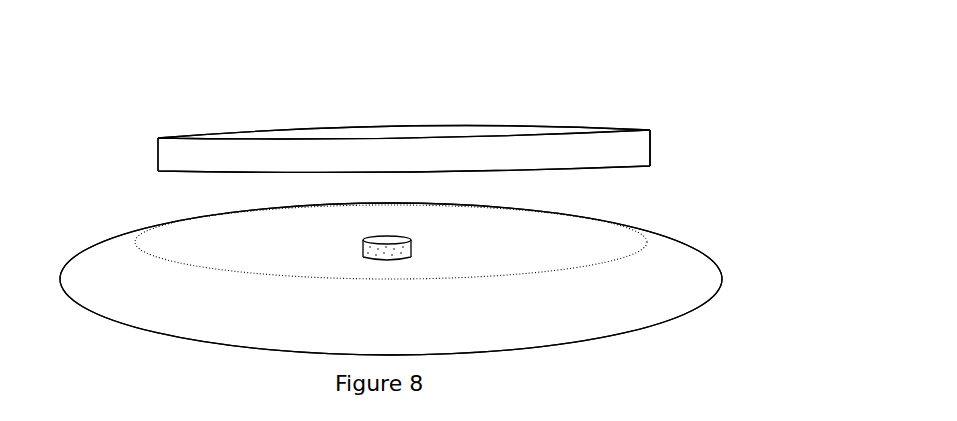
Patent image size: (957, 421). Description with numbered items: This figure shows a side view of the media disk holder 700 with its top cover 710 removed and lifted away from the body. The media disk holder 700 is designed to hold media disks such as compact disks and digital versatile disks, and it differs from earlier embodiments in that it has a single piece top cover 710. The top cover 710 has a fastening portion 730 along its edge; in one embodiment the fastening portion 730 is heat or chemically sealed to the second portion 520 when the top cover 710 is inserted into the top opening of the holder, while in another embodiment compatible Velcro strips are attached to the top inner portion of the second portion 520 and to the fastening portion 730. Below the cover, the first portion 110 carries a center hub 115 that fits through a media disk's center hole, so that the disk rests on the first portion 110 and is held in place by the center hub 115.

The media disk holder 700 is at (180, 60).
The top cover 710 is at (470, 122).
The fastening portion 730 is at (657, 147).
The second portion 520 is at (187, 292).
The first portion 110 is at (222, 260).
The center hub 115 is at (395, 257).